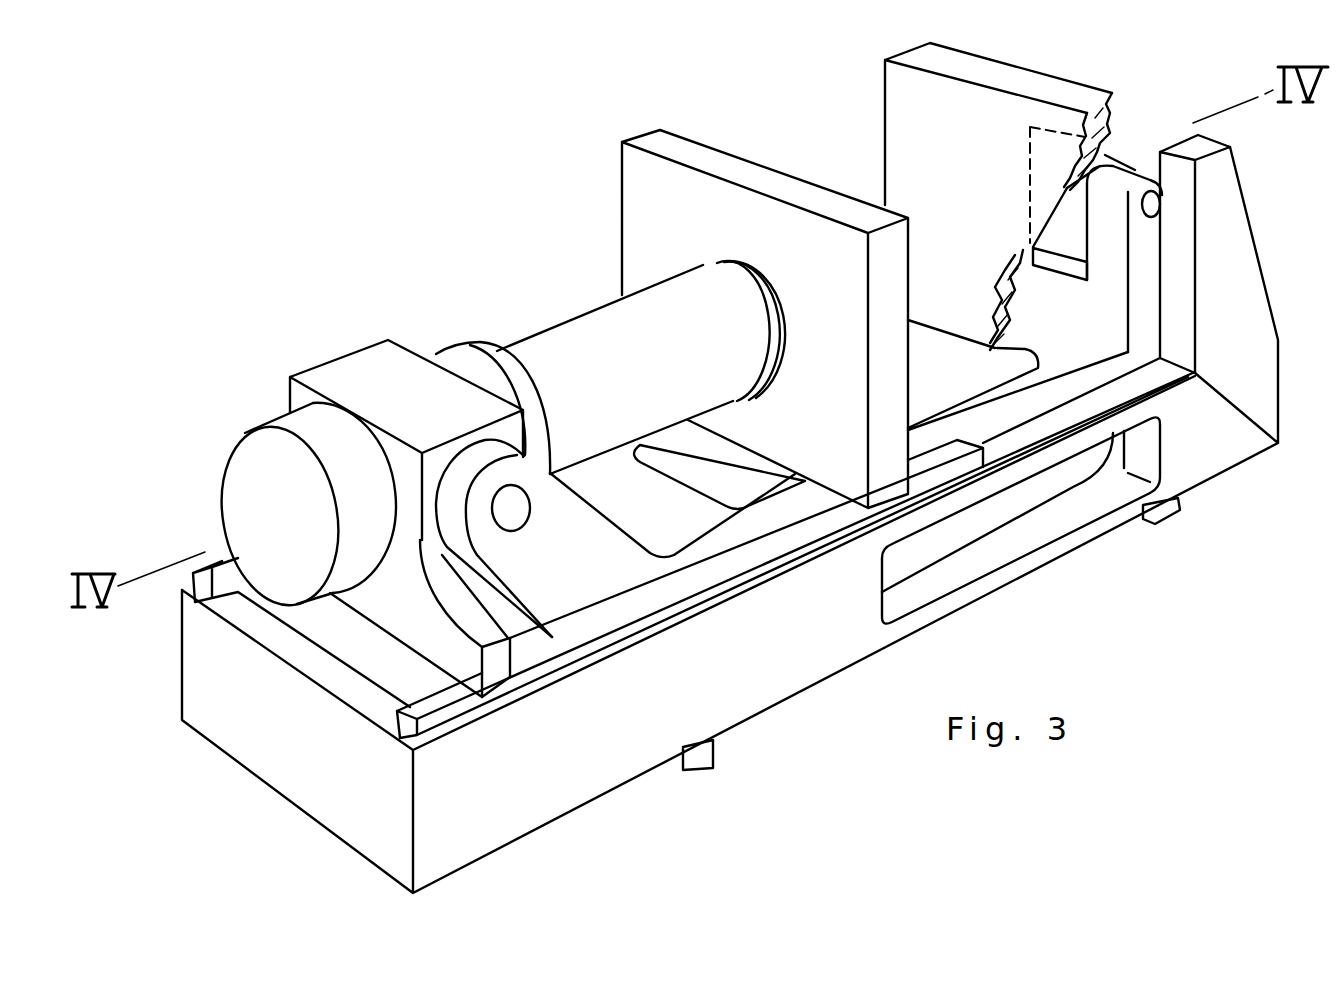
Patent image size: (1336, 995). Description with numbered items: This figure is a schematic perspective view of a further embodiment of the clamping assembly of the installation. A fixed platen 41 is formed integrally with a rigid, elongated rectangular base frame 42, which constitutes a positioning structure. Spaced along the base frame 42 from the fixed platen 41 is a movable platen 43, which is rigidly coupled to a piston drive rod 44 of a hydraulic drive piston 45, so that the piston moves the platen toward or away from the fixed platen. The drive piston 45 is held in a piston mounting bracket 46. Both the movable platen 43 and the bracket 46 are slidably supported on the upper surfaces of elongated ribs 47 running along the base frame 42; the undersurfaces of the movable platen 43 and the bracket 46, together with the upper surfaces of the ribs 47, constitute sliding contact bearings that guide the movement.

The fixed platen 41 is at (1016, 78).
The base frame 42 is at (764, 664).
The movable platen 43 is at (736, 165).
The piston drive rod 44 is at (566, 326).
The hydraulic drive piston 45 is at (454, 352).
The piston mounting bracket 46 is at (341, 375).
The elongated ribs 47 is at (578, 640).